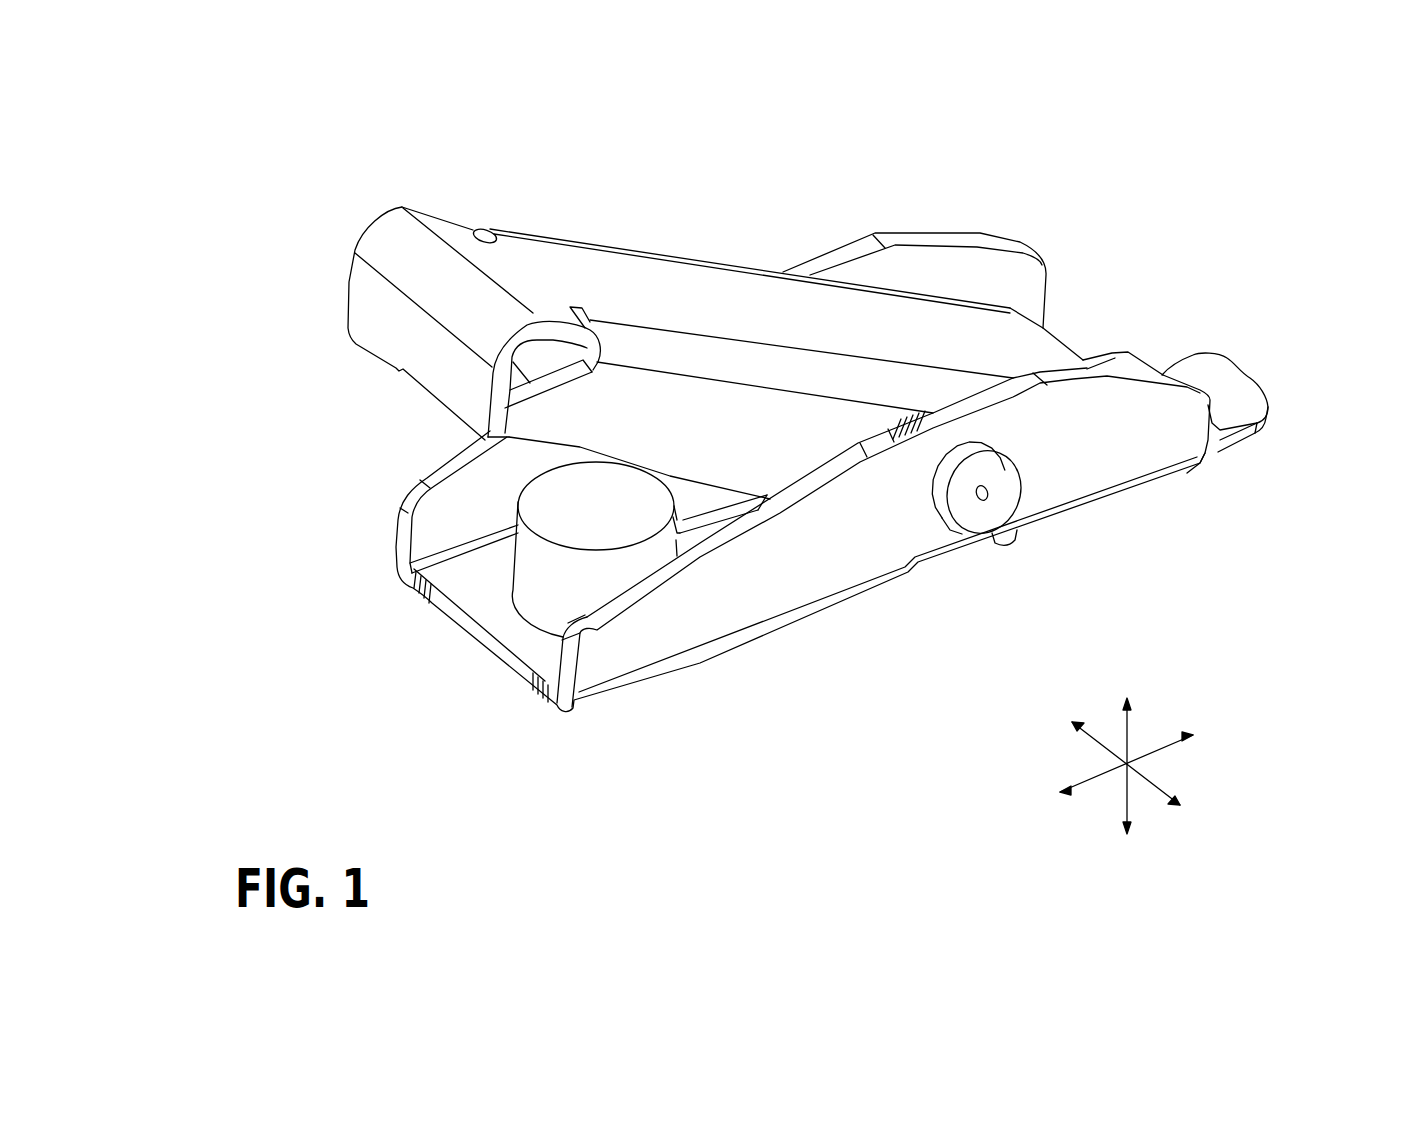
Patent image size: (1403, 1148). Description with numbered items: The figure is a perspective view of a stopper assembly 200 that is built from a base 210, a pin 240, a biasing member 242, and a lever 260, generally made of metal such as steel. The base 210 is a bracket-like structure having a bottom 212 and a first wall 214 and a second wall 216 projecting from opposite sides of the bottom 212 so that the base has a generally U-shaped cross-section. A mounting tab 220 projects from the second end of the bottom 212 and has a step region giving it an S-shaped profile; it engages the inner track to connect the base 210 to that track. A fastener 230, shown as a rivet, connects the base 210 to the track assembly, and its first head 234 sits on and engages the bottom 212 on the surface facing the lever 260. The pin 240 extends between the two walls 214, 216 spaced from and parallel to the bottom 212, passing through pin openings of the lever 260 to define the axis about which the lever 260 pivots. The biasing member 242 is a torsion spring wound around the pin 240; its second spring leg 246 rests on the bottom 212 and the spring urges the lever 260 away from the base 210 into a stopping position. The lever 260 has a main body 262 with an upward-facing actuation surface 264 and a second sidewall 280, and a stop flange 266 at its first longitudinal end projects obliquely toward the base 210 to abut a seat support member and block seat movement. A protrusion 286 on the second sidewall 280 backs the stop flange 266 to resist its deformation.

The stopper assembly 200 is at (405, 160).
The base 210 is at (983, 228).
The bottom 212 is at (470, 637).
The first wall 214 is at (405, 533).
The second wall 216 is at (568, 662).
The mounting tab 220 is at (1230, 358).
The fastener 230 is at (533, 569).
The first head 234 is at (594, 549).
The pin 240 is at (1007, 483).
The biasing member 242 is at (708, 517).
The second spring leg 246 is at (720, 514).
The lever 260 is at (665, 246).
The main body 262 is at (950, 325).
The actuation surface 264 is at (750, 308).
The stop flange 266 is at (433, 388).
The second sidewall 280 is at (775, 445).
The protrusion 286 is at (531, 385).